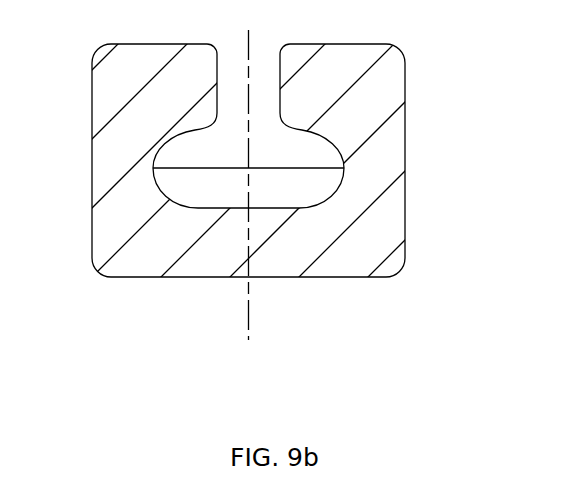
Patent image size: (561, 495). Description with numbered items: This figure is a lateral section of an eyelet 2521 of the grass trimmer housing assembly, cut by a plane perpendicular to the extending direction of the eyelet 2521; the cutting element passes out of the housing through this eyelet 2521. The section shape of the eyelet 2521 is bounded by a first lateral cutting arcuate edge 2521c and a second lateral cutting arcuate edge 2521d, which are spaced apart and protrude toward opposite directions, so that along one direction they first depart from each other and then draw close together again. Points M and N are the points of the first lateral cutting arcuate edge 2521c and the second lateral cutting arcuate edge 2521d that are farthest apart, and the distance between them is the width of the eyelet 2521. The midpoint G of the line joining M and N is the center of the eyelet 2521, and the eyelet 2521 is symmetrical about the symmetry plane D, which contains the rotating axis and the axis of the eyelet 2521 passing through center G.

The eyelet 2521 is at (265, 194).
The first lateral cutting arcuate edge 2521c is at (152, 148).
The second lateral cutting arcuate edge 2521d is at (337, 147).